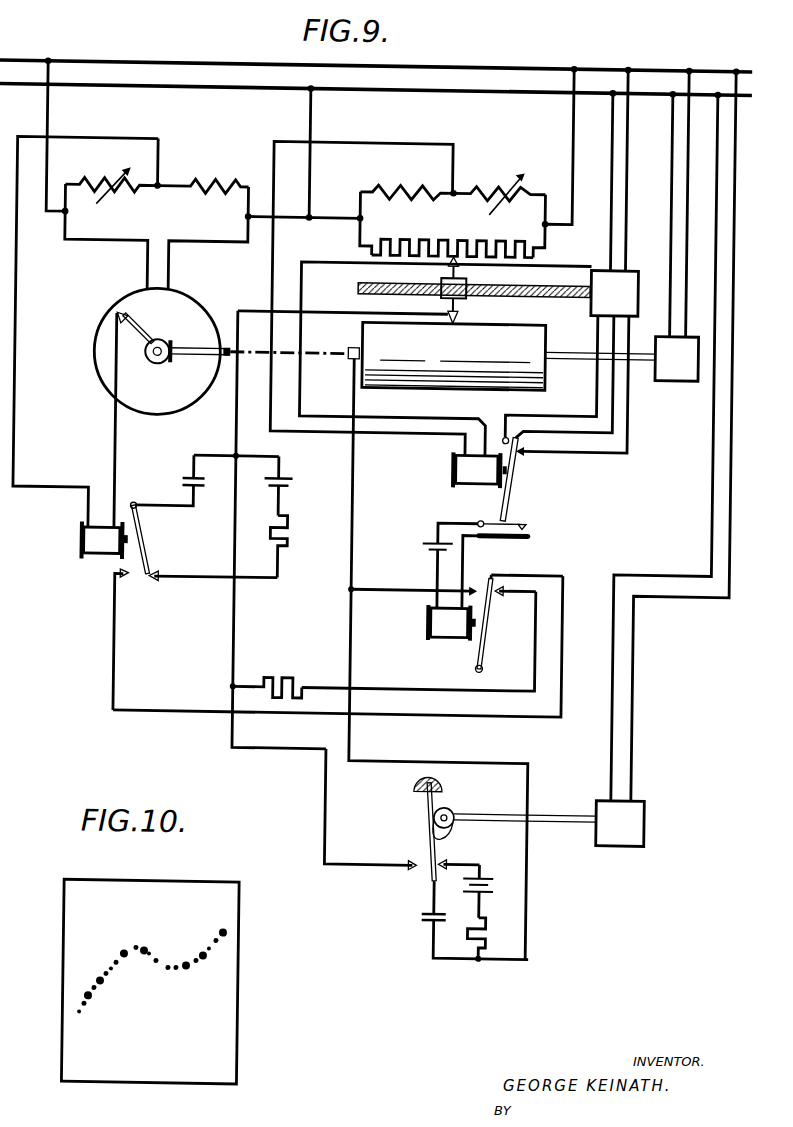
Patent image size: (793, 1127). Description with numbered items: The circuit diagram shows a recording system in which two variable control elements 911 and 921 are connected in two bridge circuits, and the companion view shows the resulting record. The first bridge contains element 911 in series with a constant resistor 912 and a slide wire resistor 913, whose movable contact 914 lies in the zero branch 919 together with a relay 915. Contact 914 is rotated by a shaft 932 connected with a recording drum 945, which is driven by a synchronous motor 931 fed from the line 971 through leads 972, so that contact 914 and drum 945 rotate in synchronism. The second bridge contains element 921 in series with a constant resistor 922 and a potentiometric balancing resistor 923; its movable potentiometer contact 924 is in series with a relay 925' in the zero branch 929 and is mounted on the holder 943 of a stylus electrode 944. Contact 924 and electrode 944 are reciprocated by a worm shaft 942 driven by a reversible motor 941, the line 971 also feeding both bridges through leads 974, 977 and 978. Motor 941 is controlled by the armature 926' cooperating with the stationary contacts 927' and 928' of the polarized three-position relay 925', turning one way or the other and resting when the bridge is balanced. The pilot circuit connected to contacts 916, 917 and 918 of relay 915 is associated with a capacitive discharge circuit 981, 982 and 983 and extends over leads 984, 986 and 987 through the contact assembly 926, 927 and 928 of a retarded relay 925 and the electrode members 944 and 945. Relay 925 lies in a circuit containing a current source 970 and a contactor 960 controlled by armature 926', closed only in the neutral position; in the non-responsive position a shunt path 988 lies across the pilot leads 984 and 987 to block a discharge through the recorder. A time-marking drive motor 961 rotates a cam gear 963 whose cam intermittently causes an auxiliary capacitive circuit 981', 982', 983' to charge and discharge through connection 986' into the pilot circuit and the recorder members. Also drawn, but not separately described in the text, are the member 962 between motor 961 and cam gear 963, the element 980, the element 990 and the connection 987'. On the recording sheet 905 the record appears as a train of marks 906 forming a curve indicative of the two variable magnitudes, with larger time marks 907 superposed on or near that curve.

In FIG. 9, the line 971 is at (194, 80).
In FIG. 9, the lead 974 is at (50, 106).
In FIG. 9, the lead 978 is at (313, 104).
In FIG. 9, the lead 977 is at (575, 122).
In FIG. 9, the leads 972 is at (674, 193).
In FIG. 9, the variable control element 911 is at (88, 179).
In FIG. 9, the constant resistor 912 is at (200, 179).
In FIG. 9, the constant resistor 922 is at (393, 179).
In FIG. 9, the variable control element 921 is at (490, 178).
In FIG. 9, the potentiometric balancing resistor 923 is at (446, 233).
In FIG. 9, the movable potentiometer contact 924 is at (464, 258).
In FIG. 9, the zero branch 929 is at (276, 258).
In FIG. 9, the zero branch 919 is at (21, 287).
In FIG. 9, the movable contact 914 is at (122, 301).
In FIG. 9, the slide wire resistor 913 is at (100, 357).
In FIG. 9, the shaft 932 is at (231, 343).
In FIG. 9, the worm shaft 942 is at (366, 281).
In FIG. 9, the holder 943 is at (449, 282).
In FIG. 9, the reversible motor 941 is at (608, 273).
In FIG. 9, the stylus electrode 944 is at (463, 314).
In FIG. 9, the recording drum 945 is at (525, 320).
In FIG. 9, the synchronous motor 931 is at (680, 370).
In FIG. 9, the stationary contact 928' is at (489, 420).
In FIG. 9, the lead 987 is at (258, 529).
In FIG. 9, the capacitive discharge circuit element 983 is at (170, 474).
In FIG. 9, the capacitive discharge circuit element 981 is at (295, 486).
In FIG. 9, the lead 986 is at (415, 477).
In FIG. 9, the relay 925' is at (456, 470).
In FIG. 9, the stationary contact 927' is at (572, 396).
In FIG. 9, the armature 926' is at (539, 479).
In FIG. 9, the relay 915 is at (89, 544).
In FIG. 9, the contact 916 is at (150, 535).
In FIG. 9, the capacitive discharge circuit element 982 is at (302, 540).
In FIG. 9, the current source 970 is at (436, 539).
In FIG. 9, the contactor 960 is at (538, 520).
In FIG. 9, the contact 927 is at (521, 562).
In FIG. 9, the contact 917 is at (160, 571).
In FIG. 9, the contact 918 is at (135, 579).
In FIG. 9, the contact 928 is at (515, 608).
In FIG. 9, the resistor 990 is at (296, 672).
In FIG. 9, the shunt path 988 is at (398, 684).
In FIG. 9, the relay 925 is at (448, 639).
In FIG. 9, the armature 926 is at (499, 625).
In FIG. 9, the connection 986' is at (438, 774).
In FIG. 9, the lead 984 is at (490, 711).
In FIG. 9, the conductor 987' is at (344, 809).
In FIG. 9, the cam gear 963 is at (464, 801).
In FIG. 9, the shaft 962 is at (568, 805).
In FIG. 9, the cam follower arm 980 is at (437, 820).
In FIG. 9, the drive motor 961 is at (655, 817).
In FIG. 9, the auxiliary capacitive circuit element 981' is at (479, 867).
In FIG. 9, the auxiliary capacitive circuit element 983' is at (411, 907).
In FIG. 9, the auxiliary capacitive circuit element 982' is at (523, 934).
In FIG. 10, the recording sheet 905 is at (229, 895).
In FIG. 10, the marks 906 is at (124, 964).
In FIG. 10, the time marks 907 is at (199, 964).